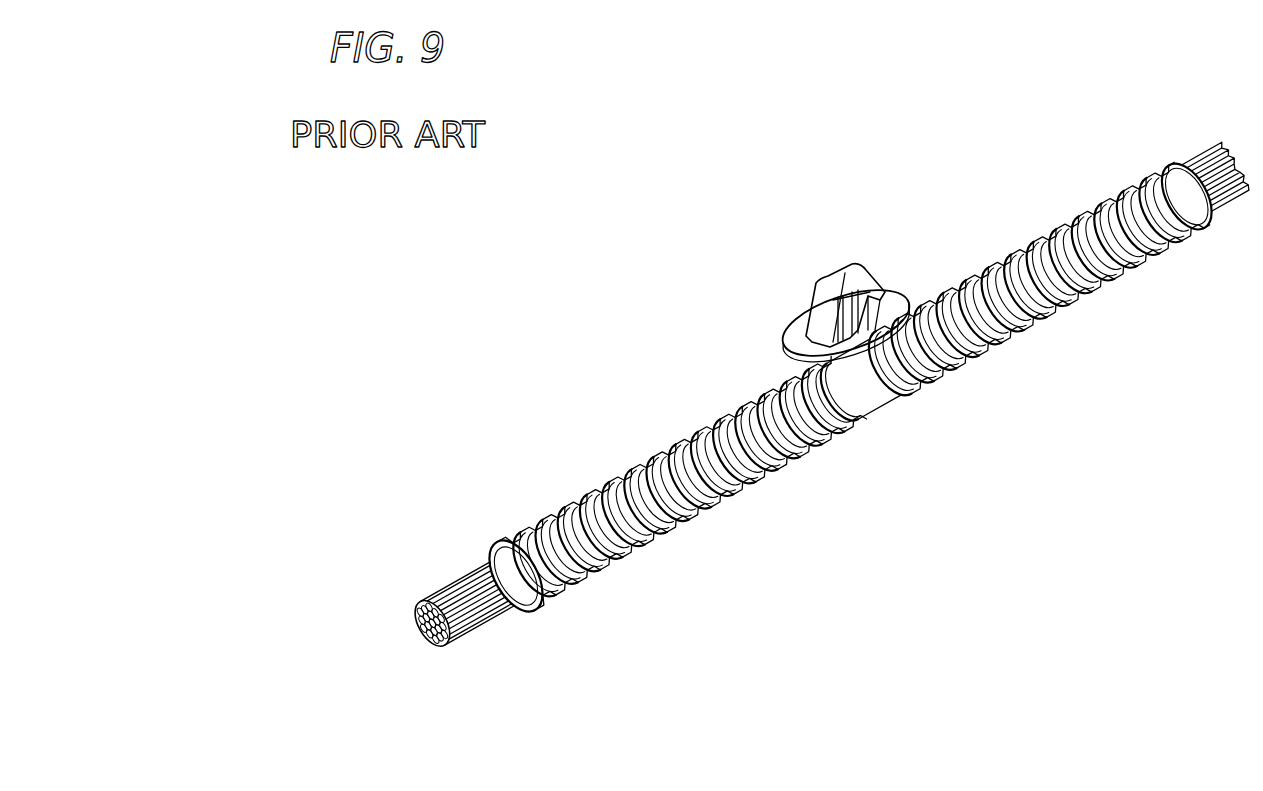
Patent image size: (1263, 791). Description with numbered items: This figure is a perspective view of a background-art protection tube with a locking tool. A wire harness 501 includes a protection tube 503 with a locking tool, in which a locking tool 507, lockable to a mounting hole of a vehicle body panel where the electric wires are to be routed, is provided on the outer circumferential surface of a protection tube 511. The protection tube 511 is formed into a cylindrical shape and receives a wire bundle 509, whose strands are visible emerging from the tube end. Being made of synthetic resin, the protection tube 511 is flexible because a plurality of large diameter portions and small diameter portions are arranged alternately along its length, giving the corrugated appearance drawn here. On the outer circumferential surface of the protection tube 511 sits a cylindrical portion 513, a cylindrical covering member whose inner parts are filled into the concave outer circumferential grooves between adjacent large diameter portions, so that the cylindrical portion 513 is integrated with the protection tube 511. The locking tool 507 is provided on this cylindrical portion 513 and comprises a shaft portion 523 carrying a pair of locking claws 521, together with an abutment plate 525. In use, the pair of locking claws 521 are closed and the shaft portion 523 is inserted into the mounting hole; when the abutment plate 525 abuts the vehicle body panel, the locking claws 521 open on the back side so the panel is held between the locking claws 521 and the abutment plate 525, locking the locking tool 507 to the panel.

The wire harness 501 is at (806, 237).
The protection tube with a locking tool 503 is at (831, 482).
The locking tool 507 is at (901, 264).
The wire bundle 509 is at (452, 566).
The protection tube 511 is at (1234, 321).
The cylindrical portion 513 is at (872, 417).
The locking claws 521 is at (880, 278).
The shaft portion 523 is at (903, 295).
The abutment plate 525 is at (787, 335).